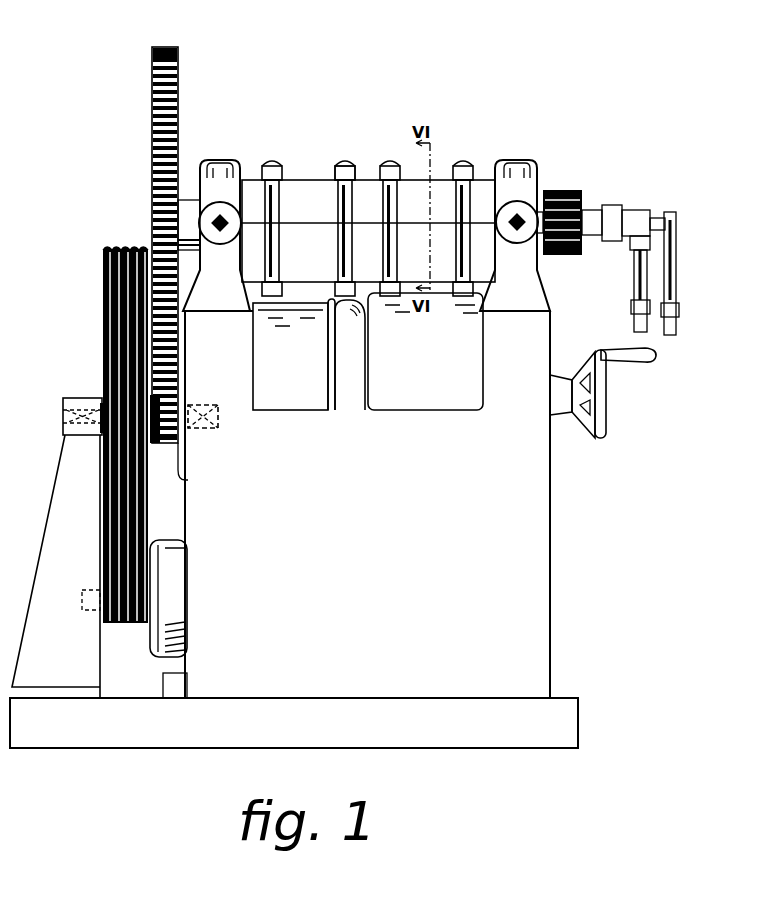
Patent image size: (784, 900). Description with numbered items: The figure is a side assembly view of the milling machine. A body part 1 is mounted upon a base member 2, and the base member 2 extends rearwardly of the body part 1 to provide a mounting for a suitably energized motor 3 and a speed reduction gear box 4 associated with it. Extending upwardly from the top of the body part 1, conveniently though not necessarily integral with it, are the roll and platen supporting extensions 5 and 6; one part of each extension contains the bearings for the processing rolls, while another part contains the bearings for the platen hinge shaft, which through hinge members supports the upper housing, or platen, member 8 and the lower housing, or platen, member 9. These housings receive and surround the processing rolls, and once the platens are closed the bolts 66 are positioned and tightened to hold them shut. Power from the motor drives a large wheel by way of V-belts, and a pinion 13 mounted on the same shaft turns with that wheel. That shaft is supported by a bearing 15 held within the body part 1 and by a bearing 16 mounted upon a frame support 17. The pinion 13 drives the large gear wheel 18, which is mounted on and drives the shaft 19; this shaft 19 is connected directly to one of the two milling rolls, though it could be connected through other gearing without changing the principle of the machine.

The body part 1 is at (392, 556).
The base member 2 is at (388, 730).
The motor 3 is at (313, 390).
The speed reduction gear box 4 is at (177, 540).
The roll and platen supporting extension 5 is at (238, 337).
The roll and platen supporting extension 6 is at (500, 375).
The upper housing or platen member 8 is at (294, 183).
The lower housing or platen member 9 is at (337, 240).
The pinion 13 is at (167, 445).
The bearing 15 is at (210, 430).
The bearing 16 is at (78, 408).
The frame support 17 is at (95, 561).
The large gear wheel 18 is at (157, 175).
The shaft 19 is at (186, 218).
The bolts 66 is at (352, 165).